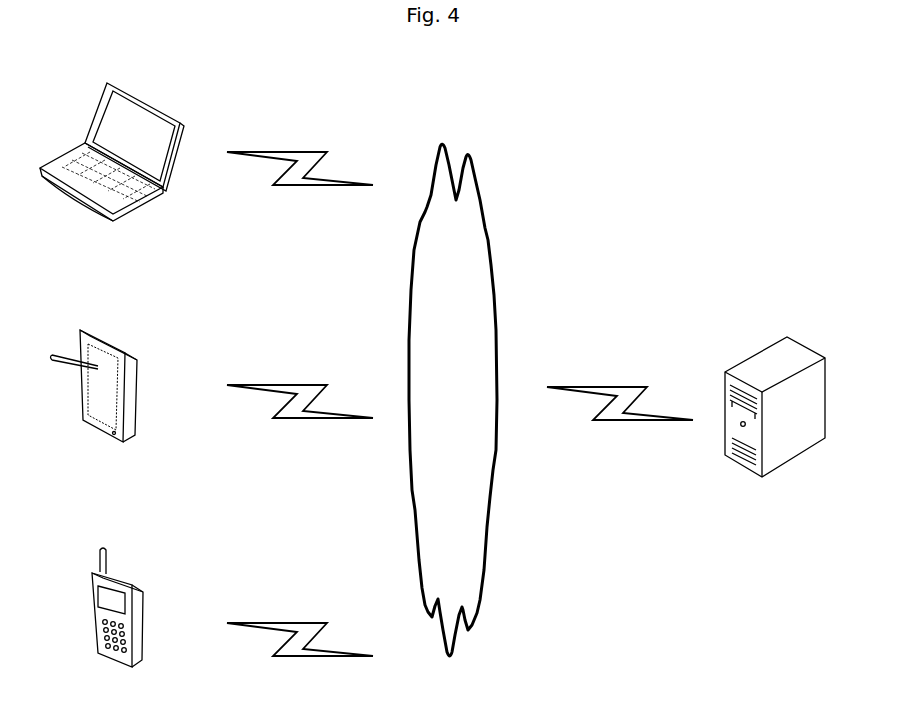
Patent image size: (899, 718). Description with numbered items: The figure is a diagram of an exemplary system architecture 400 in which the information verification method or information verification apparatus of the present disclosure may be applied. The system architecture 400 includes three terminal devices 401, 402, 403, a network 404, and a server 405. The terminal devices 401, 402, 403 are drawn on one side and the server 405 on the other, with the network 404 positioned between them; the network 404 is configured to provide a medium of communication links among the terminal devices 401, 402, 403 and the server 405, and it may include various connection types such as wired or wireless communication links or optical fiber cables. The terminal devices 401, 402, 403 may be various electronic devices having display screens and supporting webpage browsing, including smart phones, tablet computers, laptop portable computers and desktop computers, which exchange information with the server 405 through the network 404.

The system architecture 400 is at (721, 77).
The terminal device 401 is at (117, 626).
The terminal device 402 is at (94, 408).
The terminal device 403 is at (112, 170).
The network 404 is at (453, 400).
The server 405 is at (775, 426).